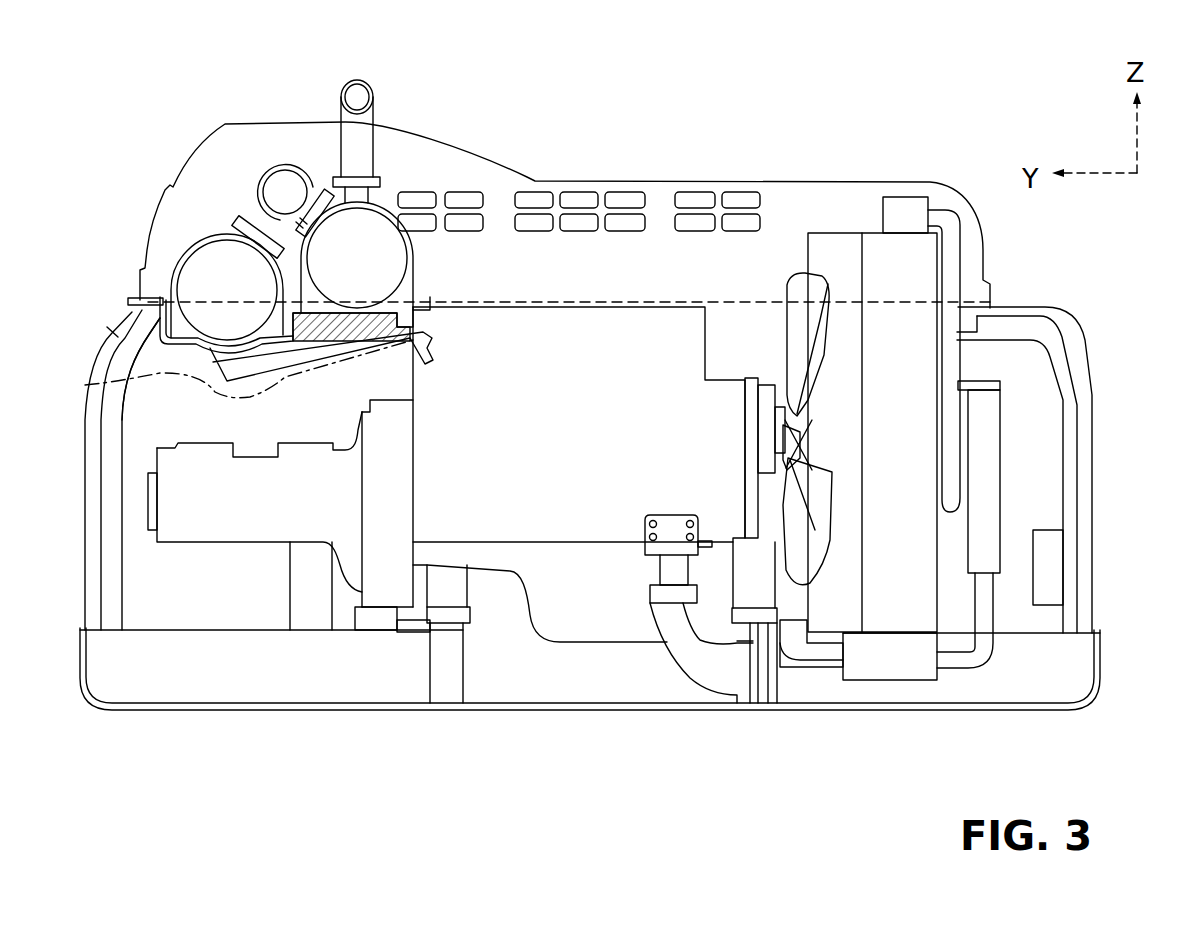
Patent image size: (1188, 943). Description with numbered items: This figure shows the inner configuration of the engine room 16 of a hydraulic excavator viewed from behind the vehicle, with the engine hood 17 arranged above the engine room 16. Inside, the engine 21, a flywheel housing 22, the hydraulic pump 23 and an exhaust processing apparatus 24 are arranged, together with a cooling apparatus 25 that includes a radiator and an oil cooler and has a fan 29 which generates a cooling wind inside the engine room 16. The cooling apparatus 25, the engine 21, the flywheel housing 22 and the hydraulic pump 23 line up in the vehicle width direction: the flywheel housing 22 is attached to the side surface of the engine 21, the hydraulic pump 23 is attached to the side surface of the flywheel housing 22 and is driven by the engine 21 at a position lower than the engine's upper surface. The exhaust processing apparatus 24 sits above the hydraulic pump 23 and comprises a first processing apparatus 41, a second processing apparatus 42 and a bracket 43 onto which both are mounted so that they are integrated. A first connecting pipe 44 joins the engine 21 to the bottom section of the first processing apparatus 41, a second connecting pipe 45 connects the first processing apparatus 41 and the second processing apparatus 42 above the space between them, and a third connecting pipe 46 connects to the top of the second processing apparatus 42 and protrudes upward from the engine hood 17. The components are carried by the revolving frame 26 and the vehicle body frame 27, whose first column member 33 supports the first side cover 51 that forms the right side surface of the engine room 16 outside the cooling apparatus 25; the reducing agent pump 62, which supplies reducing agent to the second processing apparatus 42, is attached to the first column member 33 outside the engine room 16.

The engine room 16 is at (1087, 277).
The engine hood 17 is at (732, 152).
The engine 21 is at (593, 517).
The flywheel housing 22 is at (383, 575).
The hydraulic pump 23 is at (212, 520).
The exhaust processing apparatus 24 is at (226, 204).
The cooling apparatus 25 is at (867, 220).
The revolving frame 26 is at (788, 682).
The vehicle body frame 27 is at (113, 346).
The fan 29 is at (800, 293).
The first column member 33 is at (1075, 449).
The first processing apparatus 41 is at (210, 253).
The second processing apparatus 42 is at (373, 233).
The bracket 43 is at (137, 300).
The first connecting pipe 44 is at (85, 385).
The second connecting pipe 45 is at (288, 173).
The third connecting pipe 46 is at (363, 150).
The first side cover 51 is at (1092, 358).
The reducing agent pump 62 is at (1057, 571).